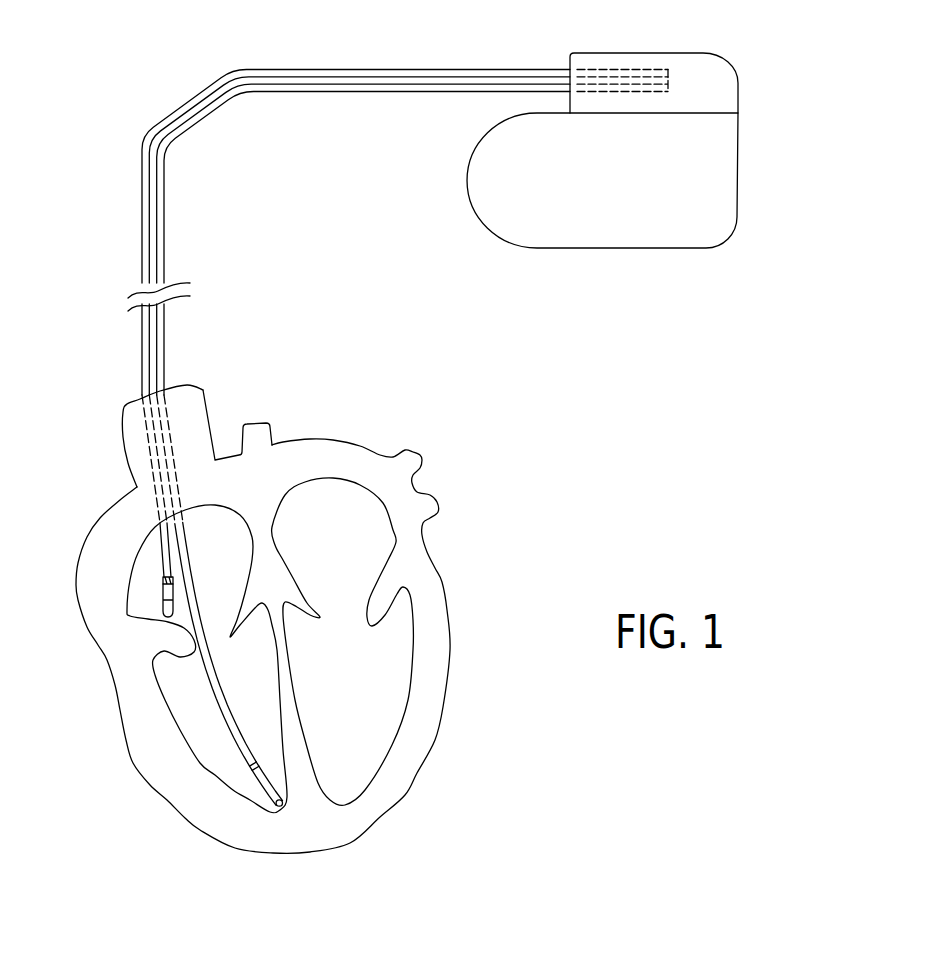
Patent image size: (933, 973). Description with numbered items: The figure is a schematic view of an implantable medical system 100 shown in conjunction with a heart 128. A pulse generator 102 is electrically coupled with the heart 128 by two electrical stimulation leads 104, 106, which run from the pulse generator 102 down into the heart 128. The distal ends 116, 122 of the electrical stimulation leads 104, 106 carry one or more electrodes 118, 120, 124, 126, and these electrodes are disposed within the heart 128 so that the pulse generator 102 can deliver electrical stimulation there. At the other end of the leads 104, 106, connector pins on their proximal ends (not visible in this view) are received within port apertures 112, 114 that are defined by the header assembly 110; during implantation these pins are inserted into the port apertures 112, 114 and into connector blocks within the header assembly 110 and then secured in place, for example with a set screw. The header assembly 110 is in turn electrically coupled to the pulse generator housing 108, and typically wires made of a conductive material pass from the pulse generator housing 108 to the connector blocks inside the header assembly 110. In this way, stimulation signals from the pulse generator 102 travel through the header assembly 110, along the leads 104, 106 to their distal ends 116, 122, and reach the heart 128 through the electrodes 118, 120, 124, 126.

The implantable medical system 100 is at (155, 102).
The pulse generator 102 is at (757, 158).
The electrical stimulation lead 104 is at (147, 273).
The electrical stimulation lead 106 is at (160, 252).
The pulse generator housing 108 is at (657, 220).
The header assembly 110 is at (707, 80).
The port aperture 112 is at (590, 86).
The port aperture 114 is at (634, 73).
The distal end 116 is at (160, 594).
The electrode 118 is at (162, 579).
The electrode 120 is at (160, 619).
The distal end 122 is at (260, 786).
The electrode 124 is at (250, 763).
The electrode 126 is at (283, 807).
The heart 128 is at (332, 457).